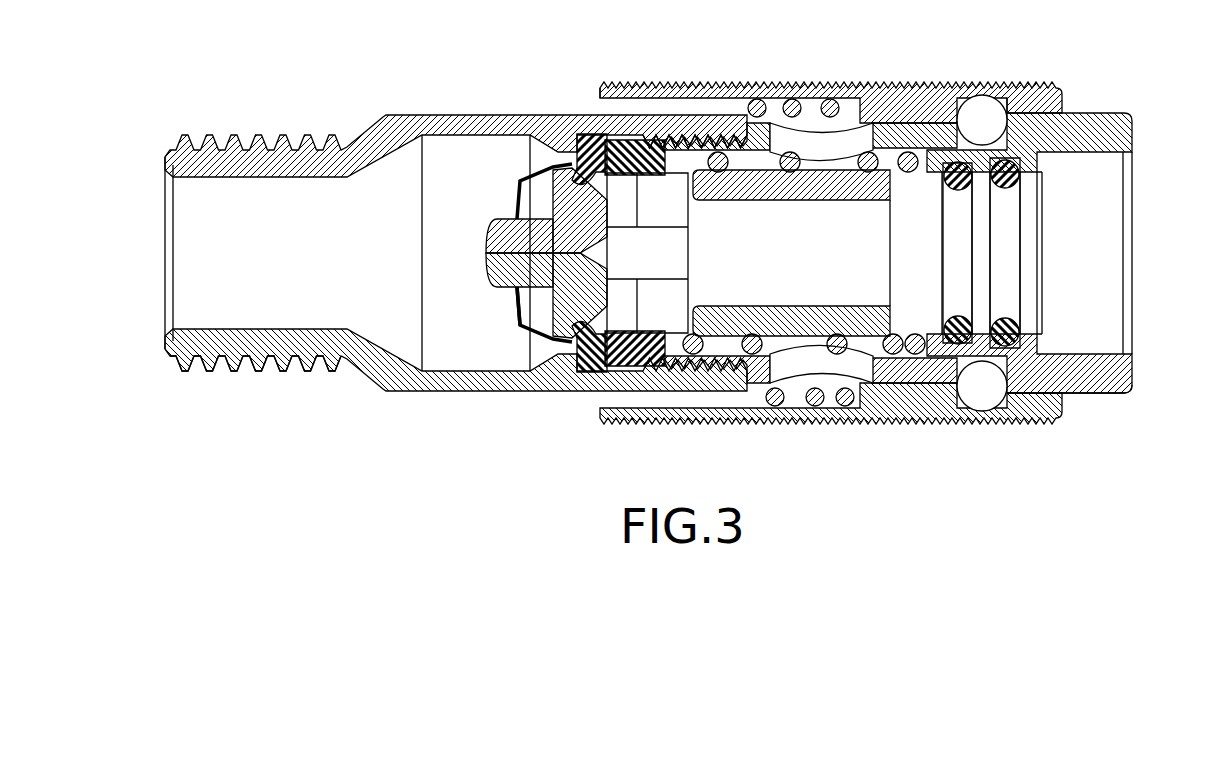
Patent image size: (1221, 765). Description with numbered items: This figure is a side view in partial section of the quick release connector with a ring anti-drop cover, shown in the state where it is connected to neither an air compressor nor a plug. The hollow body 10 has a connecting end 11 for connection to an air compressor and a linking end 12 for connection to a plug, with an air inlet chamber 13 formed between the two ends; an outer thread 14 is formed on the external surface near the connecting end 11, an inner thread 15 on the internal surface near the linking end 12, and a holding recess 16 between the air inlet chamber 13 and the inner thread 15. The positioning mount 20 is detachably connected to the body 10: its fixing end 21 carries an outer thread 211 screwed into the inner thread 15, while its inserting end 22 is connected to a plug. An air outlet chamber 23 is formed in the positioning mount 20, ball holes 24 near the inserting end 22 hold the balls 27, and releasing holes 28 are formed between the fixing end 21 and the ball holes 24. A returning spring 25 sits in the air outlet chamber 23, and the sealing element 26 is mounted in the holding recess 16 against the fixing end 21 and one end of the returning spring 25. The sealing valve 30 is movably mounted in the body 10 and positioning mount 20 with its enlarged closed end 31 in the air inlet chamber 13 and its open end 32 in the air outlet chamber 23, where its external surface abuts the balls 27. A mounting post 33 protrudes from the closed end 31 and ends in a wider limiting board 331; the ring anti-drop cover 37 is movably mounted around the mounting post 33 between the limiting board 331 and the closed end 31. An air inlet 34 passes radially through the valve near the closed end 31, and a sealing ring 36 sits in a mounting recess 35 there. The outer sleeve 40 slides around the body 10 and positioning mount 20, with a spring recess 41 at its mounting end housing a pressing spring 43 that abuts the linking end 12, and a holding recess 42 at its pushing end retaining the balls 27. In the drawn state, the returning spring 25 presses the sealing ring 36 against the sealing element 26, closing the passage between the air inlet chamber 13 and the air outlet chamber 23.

The body 10 is at (433, 106).
The connecting end 11 is at (165, 344).
The linking end 12 is at (760, 132).
The air inlet chamber 13 is at (444, 371).
The outer thread 14 is at (250, 372).
The inner thread 15 is at (708, 134).
The holding recess 16 is at (602, 378).
The positioning mount 20 is at (1103, 108).
The fixing end 21 is at (654, 138).
The outer thread 211 is at (690, 362).
The inserting end 22 is at (1134, 380).
The air outlet chamber 23 is at (904, 158).
The ball holes 24 is at (986, 392).
The returning spring 25 is at (698, 352).
The sealing element 26 is at (580, 132).
The balls 27 is at (978, 100).
The releasing holes 28 is at (852, 120).
The sealing valve 30 is at (824, 352).
The closed end 31 is at (550, 305).
The open end 32 is at (1044, 170).
The mounting post 33 is at (521, 202).
The limiting board 331 is at (495, 243).
The air inlet 34 is at (690, 290).
The mounting recess 35 is at (603, 186).
The sealing ring 36 is at (568, 360).
The ring anti-drop cover 37 is at (503, 299).
The outer sleeve 40 is at (930, 436).
The spring recess 41 is at (601, 101).
The holding recess 42 is at (1005, 110).
The pressing spring 43 is at (815, 400).